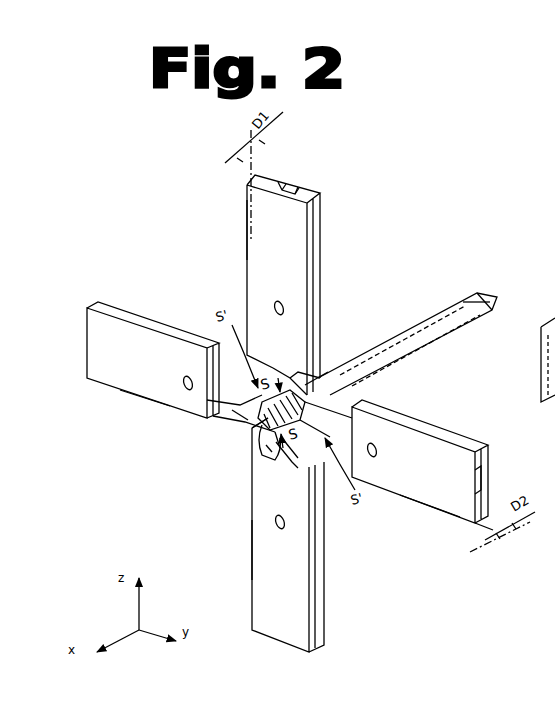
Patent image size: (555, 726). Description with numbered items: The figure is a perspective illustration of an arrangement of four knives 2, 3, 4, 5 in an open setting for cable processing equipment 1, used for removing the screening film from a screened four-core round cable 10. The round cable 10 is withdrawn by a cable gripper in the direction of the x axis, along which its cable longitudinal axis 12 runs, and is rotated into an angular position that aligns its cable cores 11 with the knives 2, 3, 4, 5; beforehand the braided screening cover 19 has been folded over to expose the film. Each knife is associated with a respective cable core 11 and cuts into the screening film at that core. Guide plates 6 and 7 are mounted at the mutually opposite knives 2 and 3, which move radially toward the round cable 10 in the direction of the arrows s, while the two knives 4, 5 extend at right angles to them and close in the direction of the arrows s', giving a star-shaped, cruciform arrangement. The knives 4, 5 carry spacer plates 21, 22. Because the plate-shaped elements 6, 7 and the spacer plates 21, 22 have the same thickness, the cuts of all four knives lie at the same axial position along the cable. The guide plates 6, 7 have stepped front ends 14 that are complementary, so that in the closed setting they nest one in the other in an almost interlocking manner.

The cable processing equipment 1 is at (117, 215).
The upper knife 2 is at (322, 245).
The lower knife 3 is at (322, 580).
The knife 4 is at (166, 330).
The knife 5 is at (452, 432).
The guide plate 6 is at (262, 222).
The guide plate 7 is at (260, 559).
The screened round cable 10 is at (442, 320).
The cable core 11 is at (262, 412).
The cable longitudinal axis 12 is at (487, 296).
The front ends of the guide plates 14 is at (258, 448).
The braided screening cover 19 is at (312, 378).
The spacer plate 21 is at (150, 402).
The spacer plate 22 is at (438, 495).